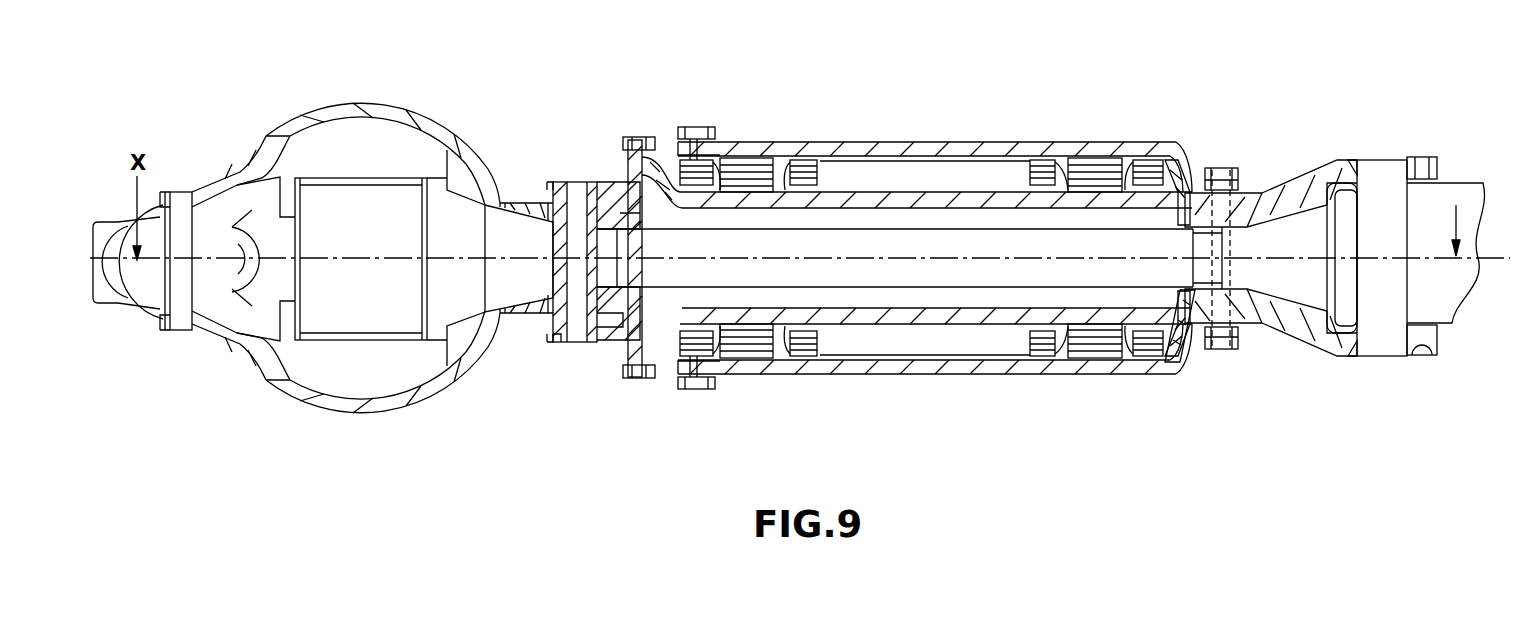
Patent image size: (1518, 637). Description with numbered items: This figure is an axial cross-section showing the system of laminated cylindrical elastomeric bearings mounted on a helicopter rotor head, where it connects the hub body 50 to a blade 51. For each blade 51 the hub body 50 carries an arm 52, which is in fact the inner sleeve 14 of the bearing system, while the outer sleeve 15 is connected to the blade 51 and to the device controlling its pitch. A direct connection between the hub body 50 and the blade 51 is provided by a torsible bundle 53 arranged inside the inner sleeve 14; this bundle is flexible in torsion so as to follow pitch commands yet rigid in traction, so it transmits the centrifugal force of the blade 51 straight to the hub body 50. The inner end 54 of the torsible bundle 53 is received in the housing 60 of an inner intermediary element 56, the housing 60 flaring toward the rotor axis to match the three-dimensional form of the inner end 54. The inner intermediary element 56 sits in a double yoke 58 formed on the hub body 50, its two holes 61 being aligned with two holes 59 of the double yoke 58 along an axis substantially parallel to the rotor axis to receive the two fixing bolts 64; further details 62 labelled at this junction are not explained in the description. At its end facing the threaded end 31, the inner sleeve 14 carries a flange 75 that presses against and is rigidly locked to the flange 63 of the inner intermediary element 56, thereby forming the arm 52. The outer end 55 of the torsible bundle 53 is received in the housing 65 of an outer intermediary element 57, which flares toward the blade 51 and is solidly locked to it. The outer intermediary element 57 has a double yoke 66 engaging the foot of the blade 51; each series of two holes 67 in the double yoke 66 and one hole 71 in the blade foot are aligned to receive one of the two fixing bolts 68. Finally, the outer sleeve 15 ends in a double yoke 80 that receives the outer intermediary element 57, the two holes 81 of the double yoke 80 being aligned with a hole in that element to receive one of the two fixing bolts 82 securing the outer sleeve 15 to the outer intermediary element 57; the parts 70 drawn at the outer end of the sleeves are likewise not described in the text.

The inner sleeve 14 is at (937, 318).
The outer sleeve 15 is at (868, 150).
The threaded end 31 is at (1130, 165).
The hub body 50 is at (402, 135).
The blade 51 is at (1462, 192).
The arm 52 is at (677, 350).
The torsible bundle 53 is at (866, 280).
The inner end 54 is at (490, 250).
The outer end 55 is at (1305, 225).
The inner intermediary element 56 is at (615, 200).
The outer intermediary element 57 is at (1278, 198).
The double yoke 58 is at (525, 195).
The holes 59 is at (552, 195).
The housing 60 is at (513, 195).
The holes 61 is at (555, 322).
The ring 62 is at (503, 188).
The flange 63 is at (638, 138).
The fixing bolts 64 is at (578, 195).
The housing 65 is at (1268, 198).
The double yoke 66 is at (1350, 175).
The holes 67 is at (1415, 163).
The fixing bolts 68 is at (1360, 345).
The retainer 70 is at (1178, 185).
The hole 71 is at (1428, 335).
The flange 75 is at (670, 165).
The double yoke 80 is at (1180, 353).
The holes 81 is at (1230, 165).
The fixing bolts 82 is at (1238, 347).